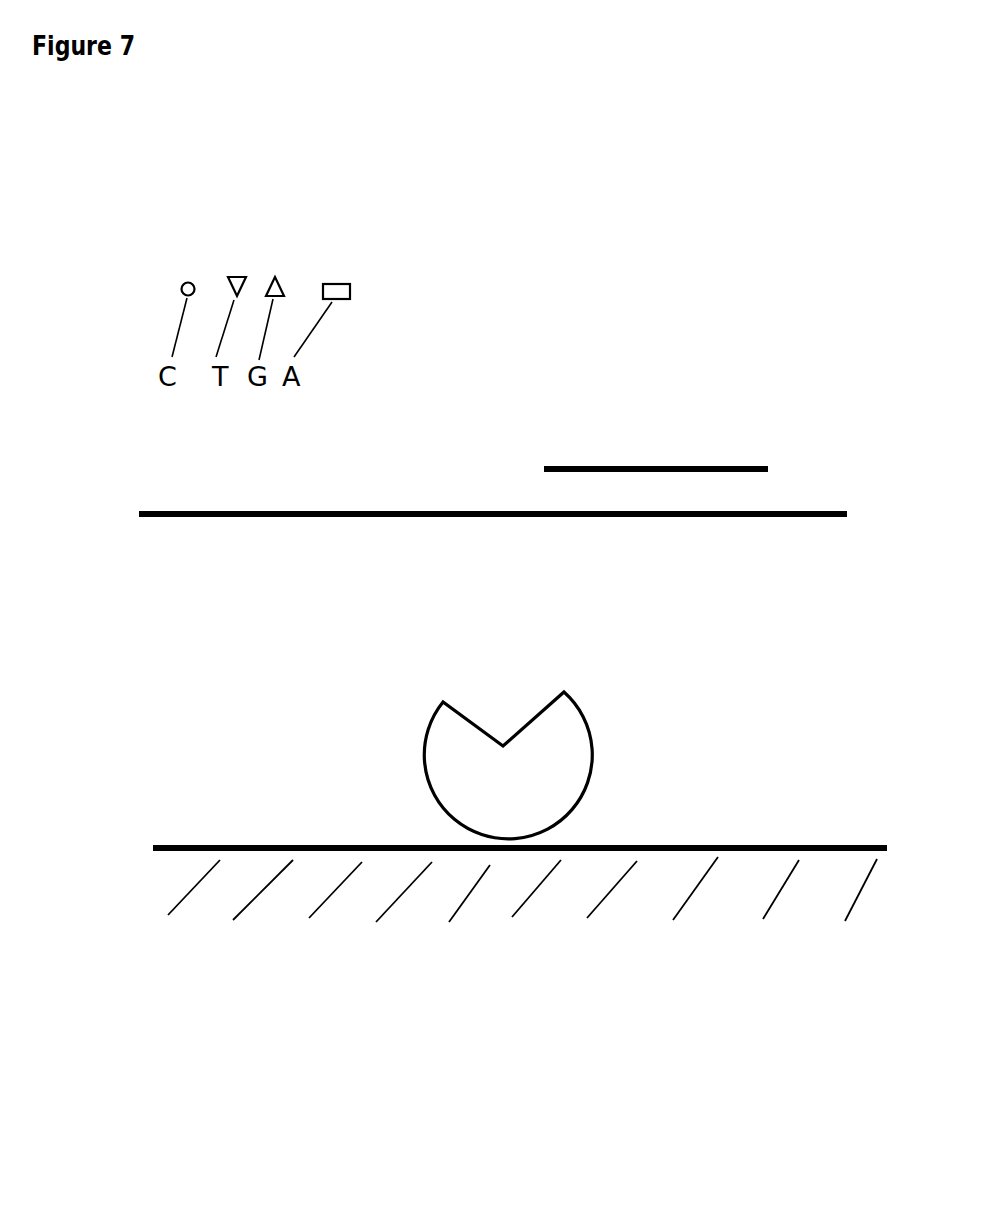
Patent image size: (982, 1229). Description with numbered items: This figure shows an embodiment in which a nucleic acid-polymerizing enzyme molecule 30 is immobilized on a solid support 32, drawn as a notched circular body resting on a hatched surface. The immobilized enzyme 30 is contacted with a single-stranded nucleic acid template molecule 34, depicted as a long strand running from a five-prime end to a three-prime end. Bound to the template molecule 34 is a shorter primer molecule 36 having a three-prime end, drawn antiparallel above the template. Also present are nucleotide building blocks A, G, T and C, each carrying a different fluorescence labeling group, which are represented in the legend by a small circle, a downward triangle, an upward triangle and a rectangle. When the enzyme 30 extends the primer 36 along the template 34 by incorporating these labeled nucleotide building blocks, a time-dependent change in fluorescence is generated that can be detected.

The nucleic acid-polymerizing enzyme molecule 30 is at (521, 820).
The solid support 32 is at (222, 902).
The single-stranded nucleic acid template molecule 34 is at (721, 537).
The primer molecule 36 is at (697, 448).